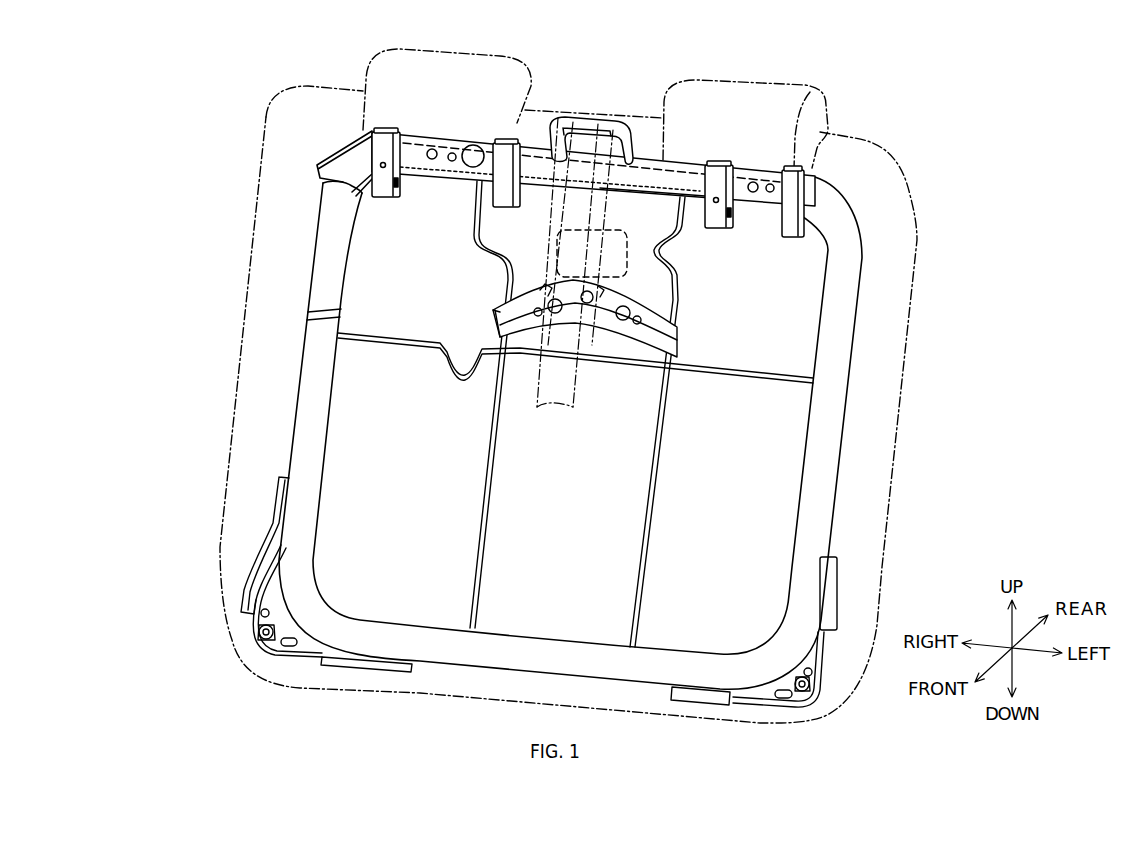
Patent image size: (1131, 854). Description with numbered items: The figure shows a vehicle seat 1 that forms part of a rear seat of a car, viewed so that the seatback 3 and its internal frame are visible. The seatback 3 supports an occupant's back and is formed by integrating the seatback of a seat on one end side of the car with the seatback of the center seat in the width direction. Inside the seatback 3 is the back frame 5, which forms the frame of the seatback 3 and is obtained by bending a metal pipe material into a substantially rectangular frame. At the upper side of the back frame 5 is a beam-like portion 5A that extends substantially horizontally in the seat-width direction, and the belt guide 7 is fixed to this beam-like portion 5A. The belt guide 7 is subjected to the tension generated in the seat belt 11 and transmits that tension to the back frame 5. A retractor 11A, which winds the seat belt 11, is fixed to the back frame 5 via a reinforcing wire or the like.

The vehicle seat 1 is at (594, 378).
The seatback 3 is at (258, 193).
The back frame 5 is at (593, 159).
The beam-like portion 5A is at (653, 194).
The belt guide 7 is at (553, 117).
The seat belt 11 is at (498, 258).
The retractor 11A is at (676, 293).